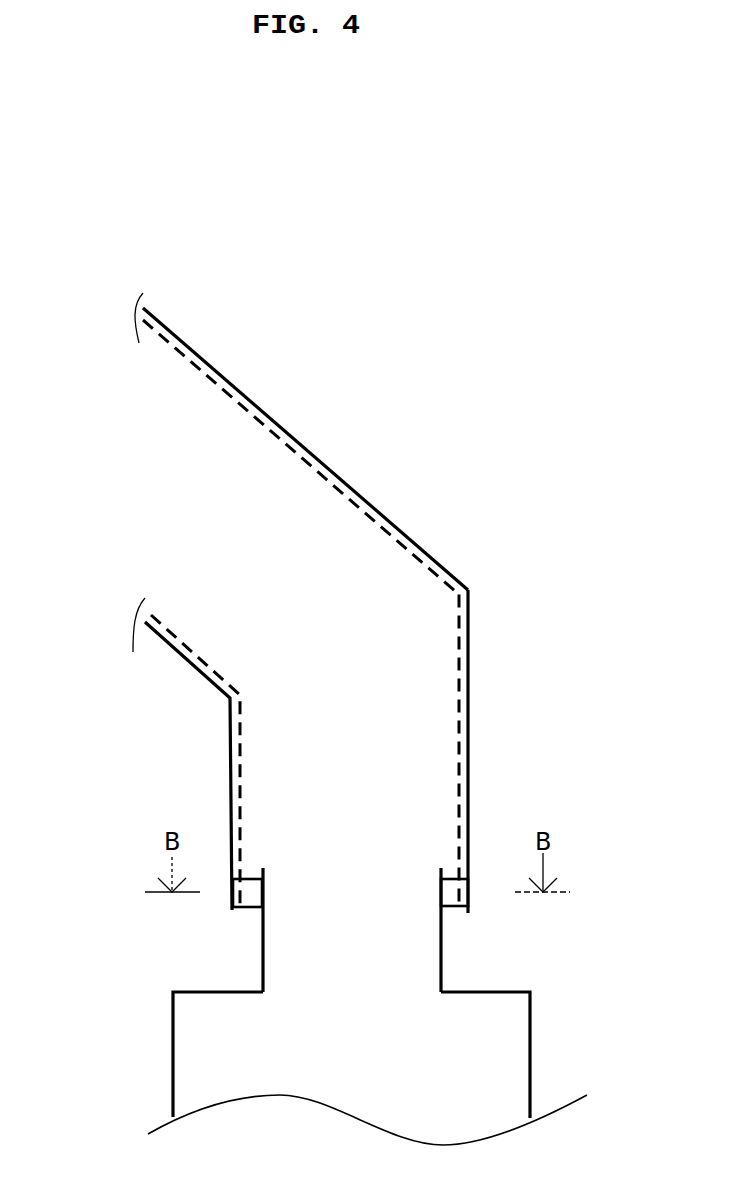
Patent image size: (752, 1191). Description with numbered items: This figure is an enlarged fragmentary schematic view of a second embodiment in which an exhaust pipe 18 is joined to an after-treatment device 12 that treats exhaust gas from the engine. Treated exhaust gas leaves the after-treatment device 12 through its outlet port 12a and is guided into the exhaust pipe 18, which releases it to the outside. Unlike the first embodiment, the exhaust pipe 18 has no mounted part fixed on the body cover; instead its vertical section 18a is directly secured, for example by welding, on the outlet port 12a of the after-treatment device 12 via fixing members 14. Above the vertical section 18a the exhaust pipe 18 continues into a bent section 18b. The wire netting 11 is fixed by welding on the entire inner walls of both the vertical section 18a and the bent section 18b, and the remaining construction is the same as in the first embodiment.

The wire netting 11 is at (280, 438).
The after-treatment device 12 is at (417, 1006).
The outlet port 12a is at (395, 953).
The fixing members 14 is at (247, 893).
The exhaust pipe 18 is at (391, 603).
The vertical section 18a is at (378, 762).
The bent section 18b is at (287, 540).